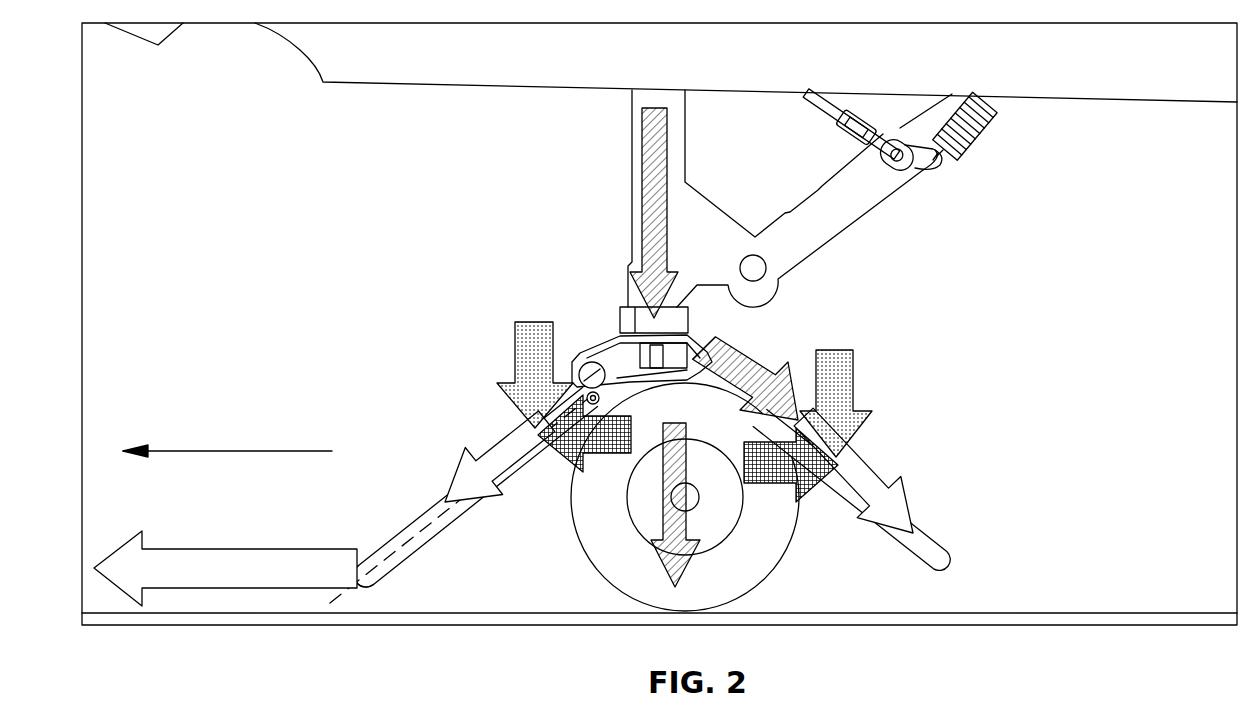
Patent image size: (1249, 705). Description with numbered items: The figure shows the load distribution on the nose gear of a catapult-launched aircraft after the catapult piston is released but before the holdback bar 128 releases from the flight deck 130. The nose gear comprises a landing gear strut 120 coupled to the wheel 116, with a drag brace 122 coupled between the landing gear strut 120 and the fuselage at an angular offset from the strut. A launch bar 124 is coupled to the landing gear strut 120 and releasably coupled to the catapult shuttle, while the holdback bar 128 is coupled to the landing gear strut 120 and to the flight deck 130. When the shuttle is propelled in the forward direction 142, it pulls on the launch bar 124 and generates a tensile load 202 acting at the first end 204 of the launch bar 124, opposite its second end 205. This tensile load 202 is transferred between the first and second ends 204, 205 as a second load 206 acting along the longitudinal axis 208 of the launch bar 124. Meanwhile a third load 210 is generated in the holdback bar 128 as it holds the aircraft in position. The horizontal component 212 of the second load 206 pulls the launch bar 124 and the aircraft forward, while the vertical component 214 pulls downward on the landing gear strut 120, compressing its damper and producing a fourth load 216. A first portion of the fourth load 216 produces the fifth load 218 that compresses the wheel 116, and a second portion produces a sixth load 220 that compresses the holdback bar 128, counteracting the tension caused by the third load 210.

The wheel 116 is at (783, 560).
The landing gear strut 120 is at (632, 164).
The drag brace 122 is at (868, 198).
The launch bar 124 is at (400, 525).
The holdback bar 128 is at (940, 533).
The flight deck 130 is at (1000, 612).
The forward direction 142 is at (265, 450).
The tensile load 202 is at (290, 548).
The first end 204 is at (375, 580).
The second end 205 is at (582, 358).
The second load 206 is at (450, 475).
The longitudinal axis 208 is at (498, 455).
The third load 210 is at (883, 532).
The horizontal component 212 is at (550, 458).
The vertical component 214 is at (528, 322).
The fourth load 216 is at (630, 262).
The fifth load 218 is at (657, 560).
The sixth load 220 is at (777, 377).